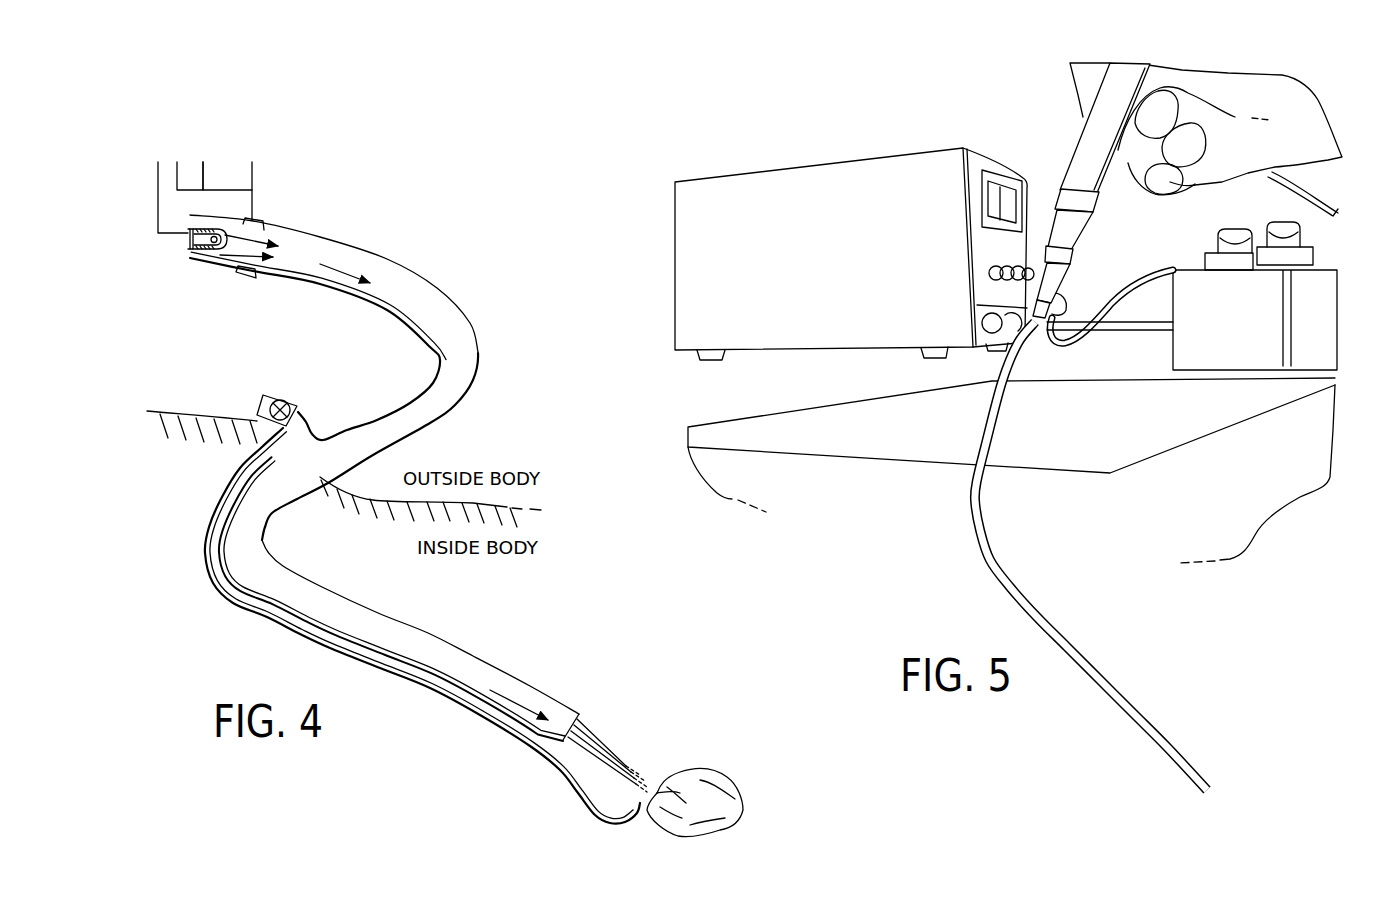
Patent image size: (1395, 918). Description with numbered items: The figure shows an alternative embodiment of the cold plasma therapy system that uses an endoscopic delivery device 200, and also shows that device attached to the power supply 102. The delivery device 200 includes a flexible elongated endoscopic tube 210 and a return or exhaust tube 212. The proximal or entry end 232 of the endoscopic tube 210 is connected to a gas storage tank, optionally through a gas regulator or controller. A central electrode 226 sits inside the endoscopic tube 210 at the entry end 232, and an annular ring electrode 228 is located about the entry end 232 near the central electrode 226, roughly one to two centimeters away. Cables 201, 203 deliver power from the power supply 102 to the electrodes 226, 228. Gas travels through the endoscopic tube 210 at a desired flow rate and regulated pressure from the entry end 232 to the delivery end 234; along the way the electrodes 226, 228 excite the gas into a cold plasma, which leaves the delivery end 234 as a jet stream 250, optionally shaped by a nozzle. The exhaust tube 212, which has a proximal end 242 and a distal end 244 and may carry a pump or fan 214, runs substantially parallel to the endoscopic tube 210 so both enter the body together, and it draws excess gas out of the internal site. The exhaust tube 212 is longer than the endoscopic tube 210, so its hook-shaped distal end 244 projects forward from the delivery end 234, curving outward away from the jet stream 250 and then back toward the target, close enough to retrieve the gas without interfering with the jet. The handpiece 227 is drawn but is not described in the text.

In FIG. 4, the endoscopic delivery device 200 is at (415, 480).
In FIG. 5, the endoscopic delivery device 200 is at (978, 558).
In FIG. 4, the cable 201 is at (158, 190).
In FIG. 4, the cable 203 is at (240, 189).
In FIG. 4, the endoscopic tube 210 is at (440, 650).
In FIG. 4, the exhaust tube 212 is at (458, 706).
In FIG. 4, the pump or fan 214 is at (292, 403).
In FIG. 4, the central electrode 226 is at (174, 238).
In FIG. 5, the handpiece 227 is at (1082, 250).
In FIG. 4, the annular ring electrode 228 is at (244, 280).
In FIG. 4, the entry end 232 is at (212, 272).
In FIG. 4, the delivery end 234 is at (538, 665).
In FIG. 4, the proximal end 242 is at (258, 416).
In FIG. 4, the distal end 244 is at (572, 793).
In FIG. 4, the jet stream 250 is at (612, 758).
In FIG. 5, the power supply 102 is at (821, 188).